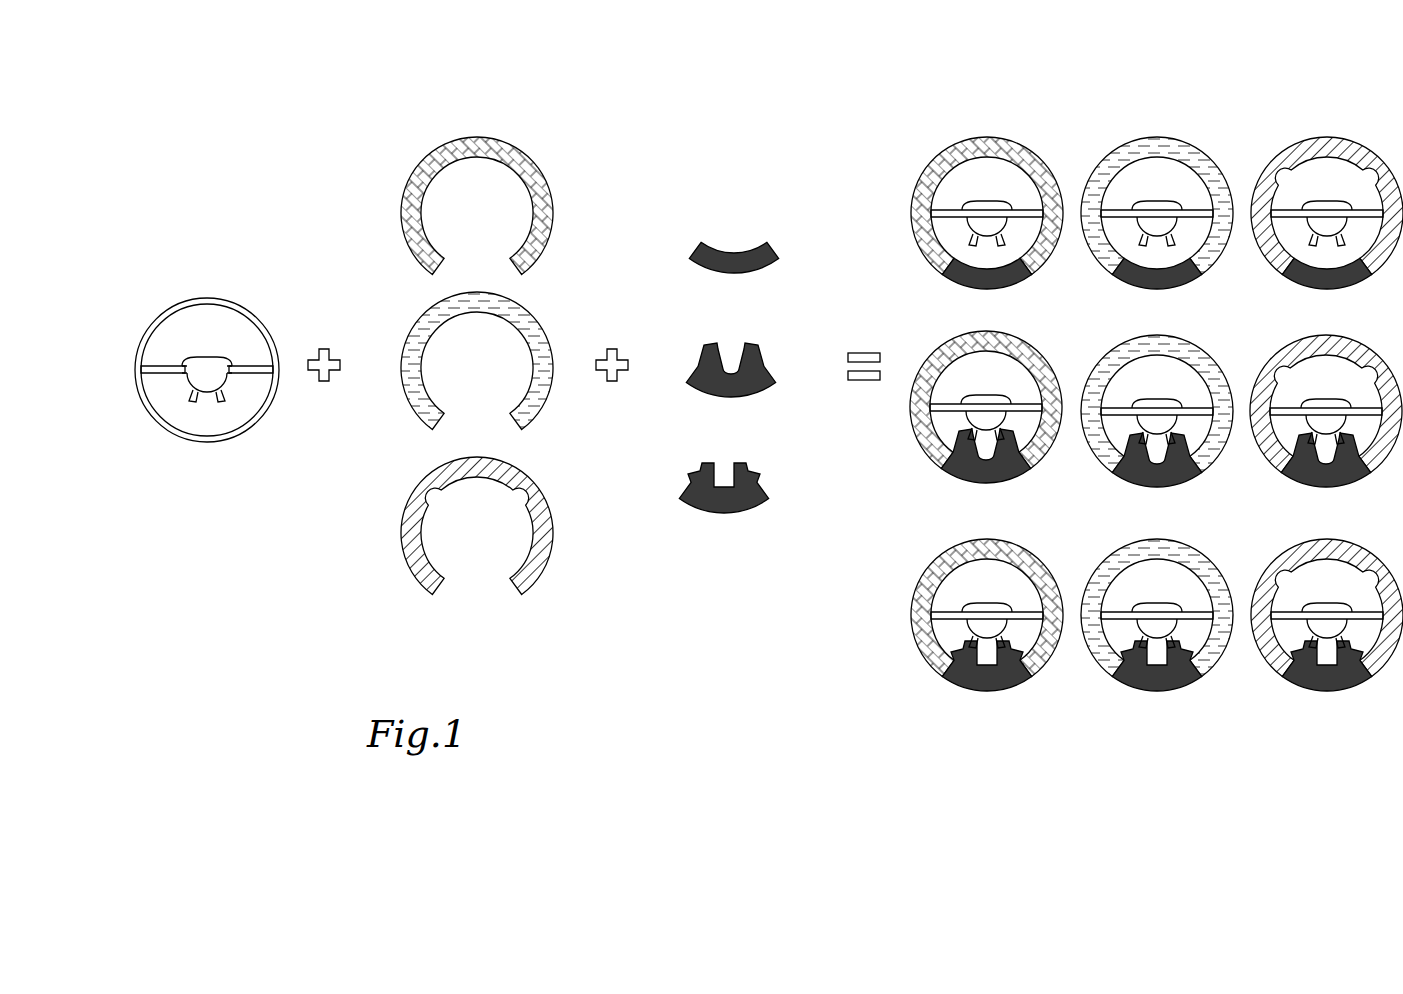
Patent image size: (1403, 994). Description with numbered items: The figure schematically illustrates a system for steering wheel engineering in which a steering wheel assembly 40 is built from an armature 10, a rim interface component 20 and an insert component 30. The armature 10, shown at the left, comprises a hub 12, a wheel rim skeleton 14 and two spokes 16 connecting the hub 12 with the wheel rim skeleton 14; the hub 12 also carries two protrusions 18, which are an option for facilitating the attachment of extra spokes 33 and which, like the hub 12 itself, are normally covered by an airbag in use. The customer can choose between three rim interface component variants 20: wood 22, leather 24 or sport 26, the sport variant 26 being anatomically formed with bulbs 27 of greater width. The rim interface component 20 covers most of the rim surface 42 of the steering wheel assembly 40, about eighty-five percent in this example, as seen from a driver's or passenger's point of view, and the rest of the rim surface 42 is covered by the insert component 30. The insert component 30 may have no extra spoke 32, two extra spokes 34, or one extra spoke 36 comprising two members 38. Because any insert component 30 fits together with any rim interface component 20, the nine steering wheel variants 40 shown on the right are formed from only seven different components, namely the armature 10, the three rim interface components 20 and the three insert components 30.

The armature 10 is at (213, 370).
The hub 12 is at (212, 372).
The wheel rim skeleton 14 is at (188, 301).
The spoke 16 is at (165, 368).
The protrusions 18 is at (219, 403).
The rim interface component 20 is at (480, 332).
The wood rim interface component variant 22 is at (531, 172).
The leather rim interface component variant 24 is at (533, 326).
The sport rim interface component variant 26 is at (500, 525).
The bulbs 27 is at (522, 506).
The insert component 30 is at (749, 300).
The insert component with no extra spoke 32 is at (745, 259).
The extra spokes 33 is at (750, 353).
The insert component with two extra spokes 34 is at (761, 352).
The insert component with one extra spoke 36 is at (757, 467).
The members 38 is at (738, 466).
The steering wheel assembly 40 is at (1128, 364).
The rim surface 42 is at (998, 141).